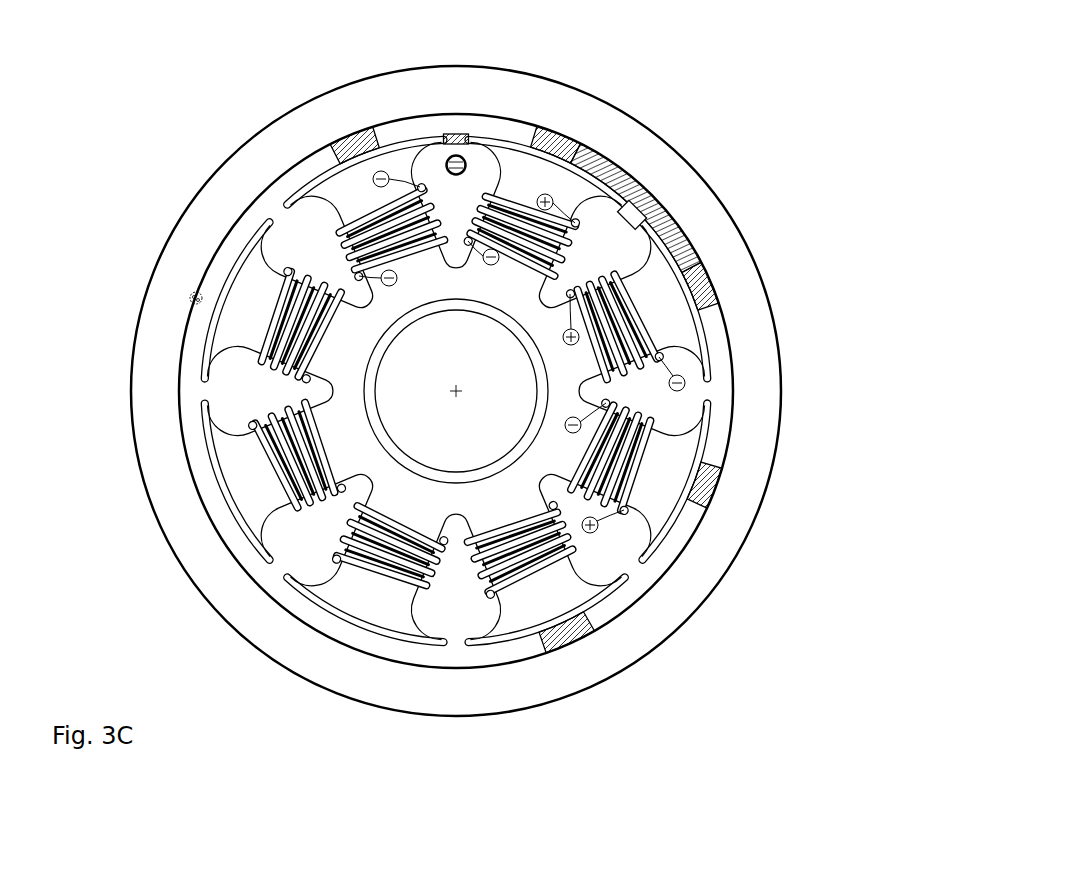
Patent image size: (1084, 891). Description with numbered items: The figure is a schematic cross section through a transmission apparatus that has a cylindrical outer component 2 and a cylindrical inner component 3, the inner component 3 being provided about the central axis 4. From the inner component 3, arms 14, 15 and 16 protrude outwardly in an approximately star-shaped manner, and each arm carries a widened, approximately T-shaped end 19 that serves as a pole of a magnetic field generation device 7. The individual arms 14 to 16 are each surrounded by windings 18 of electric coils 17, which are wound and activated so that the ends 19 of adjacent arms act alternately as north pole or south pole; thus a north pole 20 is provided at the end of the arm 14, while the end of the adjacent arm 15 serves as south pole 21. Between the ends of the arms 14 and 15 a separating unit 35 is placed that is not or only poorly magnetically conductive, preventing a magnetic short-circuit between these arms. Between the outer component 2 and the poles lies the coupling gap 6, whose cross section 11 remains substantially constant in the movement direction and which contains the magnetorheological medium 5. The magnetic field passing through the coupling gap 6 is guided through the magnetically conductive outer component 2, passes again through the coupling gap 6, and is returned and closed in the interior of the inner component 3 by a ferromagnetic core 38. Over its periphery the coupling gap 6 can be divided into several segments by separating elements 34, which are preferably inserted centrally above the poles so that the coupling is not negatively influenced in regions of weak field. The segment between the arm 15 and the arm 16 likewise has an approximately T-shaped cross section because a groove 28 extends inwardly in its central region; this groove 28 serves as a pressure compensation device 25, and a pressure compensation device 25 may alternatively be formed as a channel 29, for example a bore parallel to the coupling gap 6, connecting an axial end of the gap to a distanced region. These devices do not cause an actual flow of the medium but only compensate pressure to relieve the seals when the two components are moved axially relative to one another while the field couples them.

The outer component 2 is at (137, 448).
The inner component 3 is at (253, 511).
The central axis 4 is at (460, 387).
The magnetorheological medium 5 is at (190, 296).
The coupling gap 6 is at (430, 122).
The magnetic field generation device 7 is at (257, 278).
The cross section 11 is at (672, 222).
The arm 14 is at (347, 180).
The arm 15 is at (568, 190).
The arm 16 is at (667, 318).
The electric coil 17 is at (640, 462).
The windings 18 is at (640, 303).
The end 19 is at (425, 125).
The north pole 20 is at (392, 138).
The south pole 21 is at (533, 138).
The pressure compensation device 25 is at (461, 156).
The groove 28 is at (640, 205).
The channel 29 is at (470, 160).
The separating element 34 is at (350, 137).
The separating unit 35 is at (453, 132).
The ferromagnetic core 38 is at (215, 437).